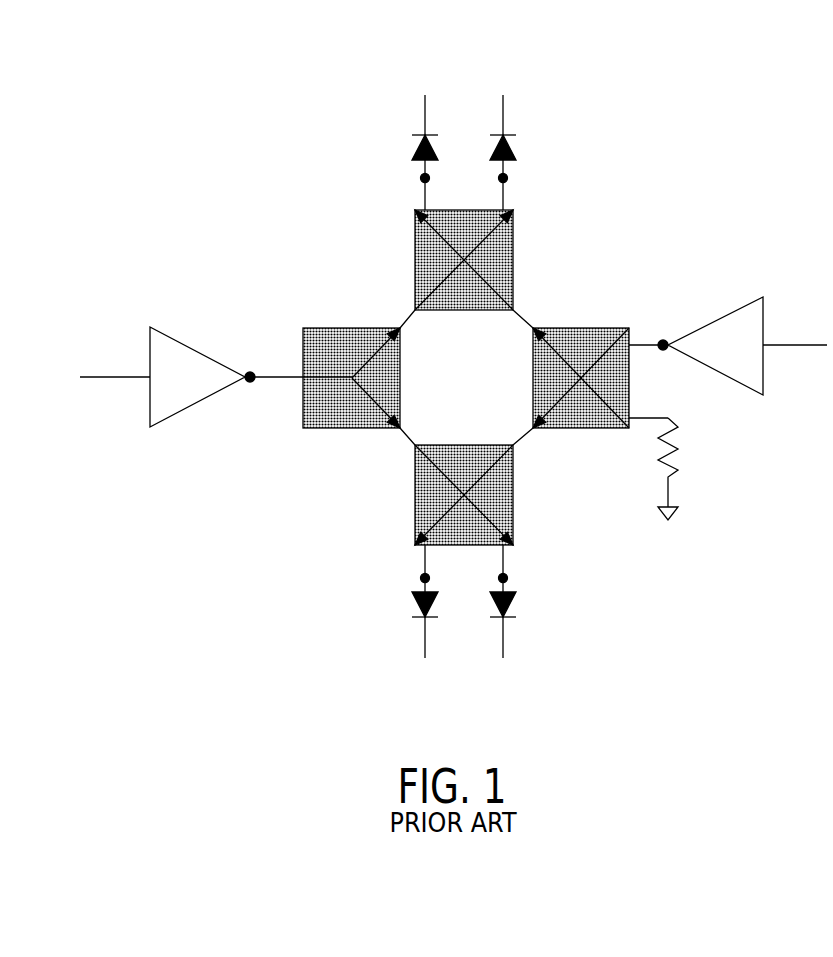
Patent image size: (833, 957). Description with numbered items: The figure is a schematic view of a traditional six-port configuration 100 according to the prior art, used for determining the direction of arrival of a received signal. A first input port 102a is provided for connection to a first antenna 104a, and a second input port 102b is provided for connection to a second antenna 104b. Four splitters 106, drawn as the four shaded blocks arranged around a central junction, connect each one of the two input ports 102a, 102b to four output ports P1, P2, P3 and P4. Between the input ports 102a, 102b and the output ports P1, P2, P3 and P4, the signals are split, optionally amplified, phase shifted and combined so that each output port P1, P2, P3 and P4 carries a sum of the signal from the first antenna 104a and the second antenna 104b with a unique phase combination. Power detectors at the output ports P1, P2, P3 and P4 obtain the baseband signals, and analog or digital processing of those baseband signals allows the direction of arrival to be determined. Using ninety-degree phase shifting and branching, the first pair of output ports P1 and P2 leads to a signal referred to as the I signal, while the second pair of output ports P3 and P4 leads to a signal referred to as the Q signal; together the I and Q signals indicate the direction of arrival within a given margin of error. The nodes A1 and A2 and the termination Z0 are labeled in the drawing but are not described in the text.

The six-port configuration 100 is at (250, 139).
The splitter 106 is at (350, 327).
The first antenna 104a is at (110, 375).
The second antenna 104b is at (812, 343).
The first input port 102a is at (297, 372).
The second input port 102b is at (645, 343).
The node A1 is at (261, 361).
The node A2 is at (666, 328).
The output port P1 is at (425, 133).
The output port P2 is at (503, 133).
The output port P3 is at (425, 619).
The output port P4 is at (503, 619).
The termination impedance Z0 is at (669, 469).